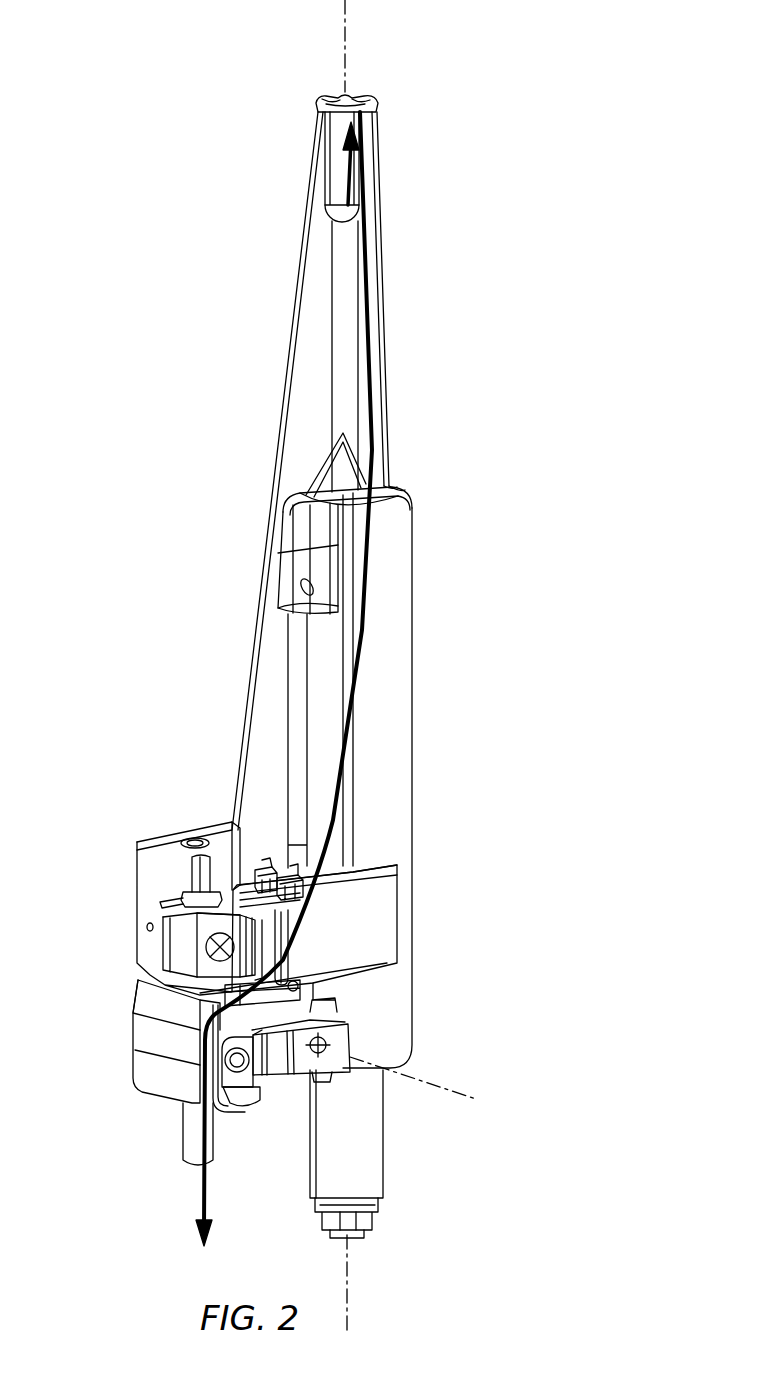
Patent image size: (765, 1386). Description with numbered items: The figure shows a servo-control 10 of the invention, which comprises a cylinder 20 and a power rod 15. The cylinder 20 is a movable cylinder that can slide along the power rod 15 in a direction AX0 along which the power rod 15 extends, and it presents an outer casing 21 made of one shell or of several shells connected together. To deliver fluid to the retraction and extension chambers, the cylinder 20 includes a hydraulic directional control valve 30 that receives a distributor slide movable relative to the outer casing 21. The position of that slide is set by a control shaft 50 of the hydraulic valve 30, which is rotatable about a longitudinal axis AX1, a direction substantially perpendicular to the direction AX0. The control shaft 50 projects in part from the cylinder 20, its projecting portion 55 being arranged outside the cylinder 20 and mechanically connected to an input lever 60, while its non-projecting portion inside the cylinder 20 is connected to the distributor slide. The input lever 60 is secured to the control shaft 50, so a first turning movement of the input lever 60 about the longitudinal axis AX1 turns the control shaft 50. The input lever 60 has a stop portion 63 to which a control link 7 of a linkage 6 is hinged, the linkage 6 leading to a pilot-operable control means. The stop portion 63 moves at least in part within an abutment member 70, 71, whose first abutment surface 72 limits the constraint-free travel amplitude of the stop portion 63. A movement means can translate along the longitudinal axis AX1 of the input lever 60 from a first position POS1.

The servo-control 10 is at (509, 241).
The cylinder 20 is at (427, 441).
The outer casing 21 is at (412, 777).
The hydraulic directional control valve 30 is at (127, 915).
The control shaft 50 is at (381, 1036).
The projecting portion 55 is at (350, 1047).
The abutment member 70 is at (139, 1046).
The jaw element 71 is at (131, 1040).
The linkage 6 is at (160, 1145).
The control link 7 is at (176, 1160).
The stop portion 63 is at (232, 1098).
The first abutment surface 72 is at (243, 1100).
The input lever 60 is at (284, 687).
The first position POS1 is at (293, 1080).
The power rod 15 is at (384, 1156).
The direction AX0 is at (356, 1300).
The longitudinal axis AX1 is at (456, 1088).